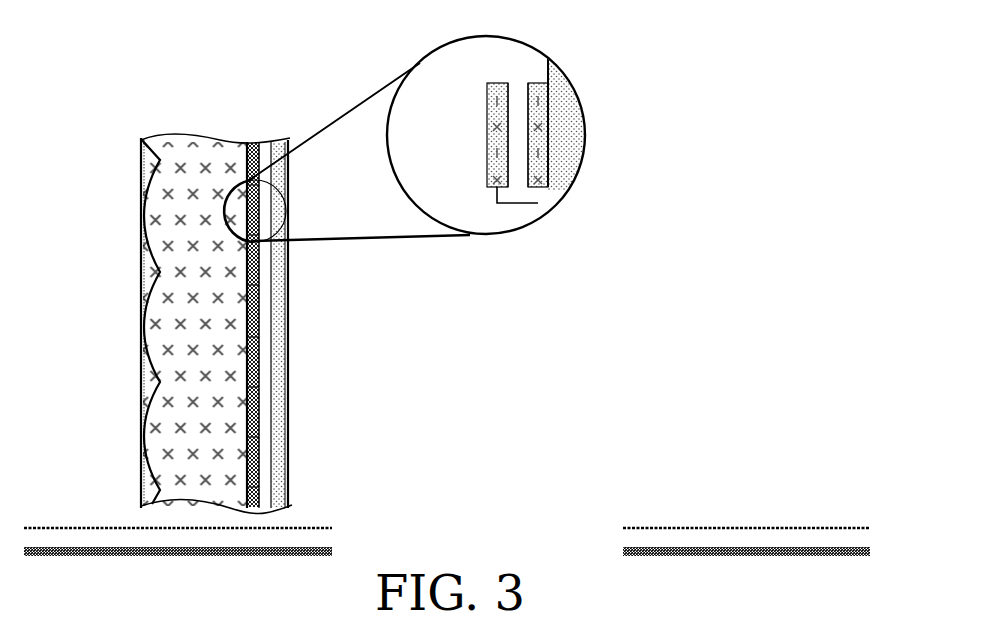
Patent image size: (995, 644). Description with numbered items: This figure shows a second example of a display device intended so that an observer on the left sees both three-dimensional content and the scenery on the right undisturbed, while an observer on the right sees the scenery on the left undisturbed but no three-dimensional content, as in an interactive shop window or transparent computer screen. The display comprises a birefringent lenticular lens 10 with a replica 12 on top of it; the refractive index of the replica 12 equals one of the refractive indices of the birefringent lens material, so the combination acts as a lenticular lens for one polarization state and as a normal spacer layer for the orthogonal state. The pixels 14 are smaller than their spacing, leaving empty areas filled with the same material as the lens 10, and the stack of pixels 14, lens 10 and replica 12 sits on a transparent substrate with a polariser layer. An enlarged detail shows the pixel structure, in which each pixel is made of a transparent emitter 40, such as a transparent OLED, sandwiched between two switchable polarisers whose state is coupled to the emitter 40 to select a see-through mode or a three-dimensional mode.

The birefringent lenticular lens 10 is at (214, 297).
The replica 12 is at (140, 158).
The pixels 14 is at (287, 239).
The transparent emitter 40 is at (518, 170).